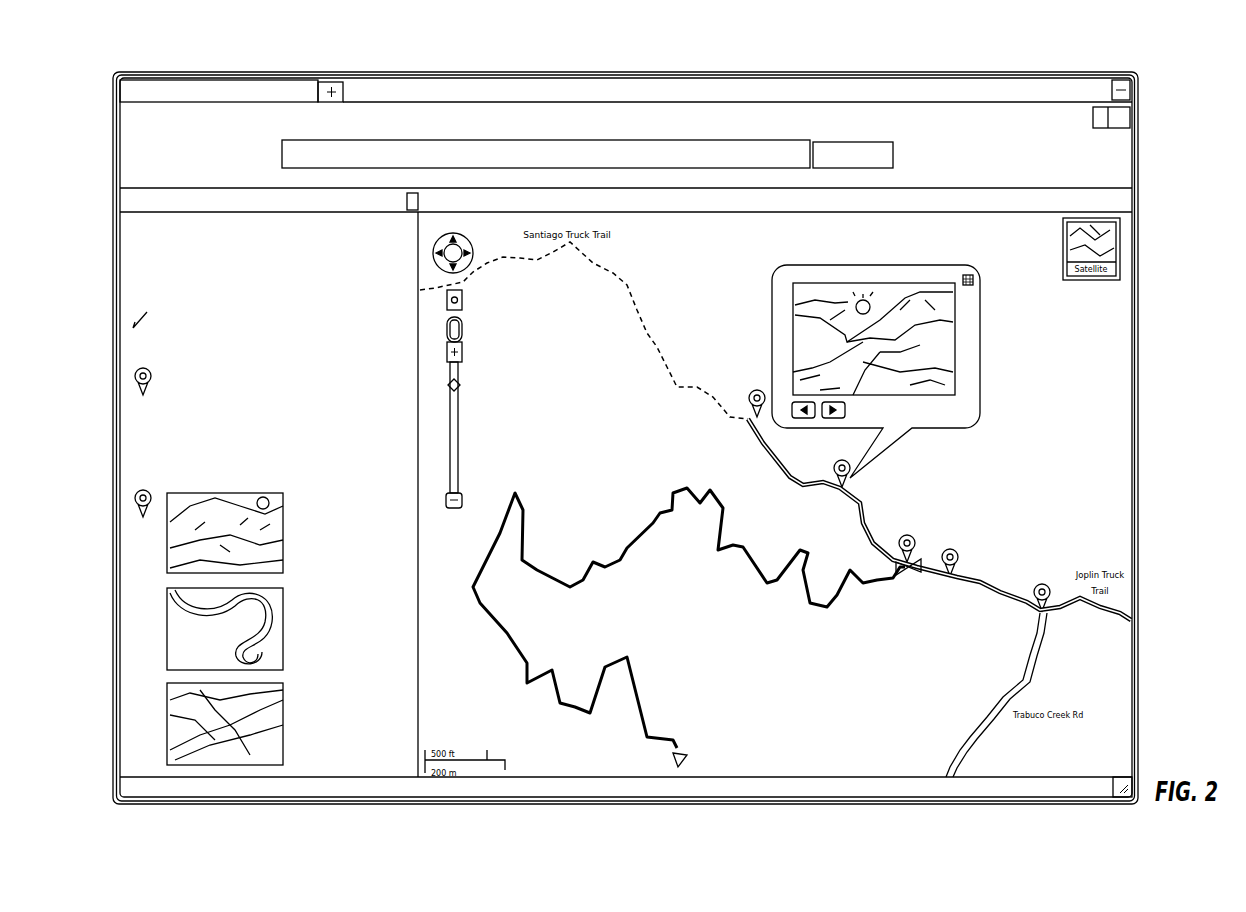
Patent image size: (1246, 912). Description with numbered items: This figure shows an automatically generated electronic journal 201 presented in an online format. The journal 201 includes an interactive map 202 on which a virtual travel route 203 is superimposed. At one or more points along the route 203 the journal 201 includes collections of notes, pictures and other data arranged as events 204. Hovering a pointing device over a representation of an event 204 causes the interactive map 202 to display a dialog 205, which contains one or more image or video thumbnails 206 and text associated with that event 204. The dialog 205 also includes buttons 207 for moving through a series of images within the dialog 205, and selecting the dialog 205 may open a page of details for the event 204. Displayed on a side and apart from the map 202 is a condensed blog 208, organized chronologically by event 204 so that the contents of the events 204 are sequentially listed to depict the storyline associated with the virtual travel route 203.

The electronic journal 201 is at (903, 48).
The interactive map 202 is at (741, 742).
The virtual travel route 203 is at (975, 573).
The event 204 is at (950, 543).
The dialog 205 is at (887, 355).
The image or video thumbnail 206 is at (950, 335).
The button 207 is at (803, 418).
The condensed blog 208 is at (300, 234).